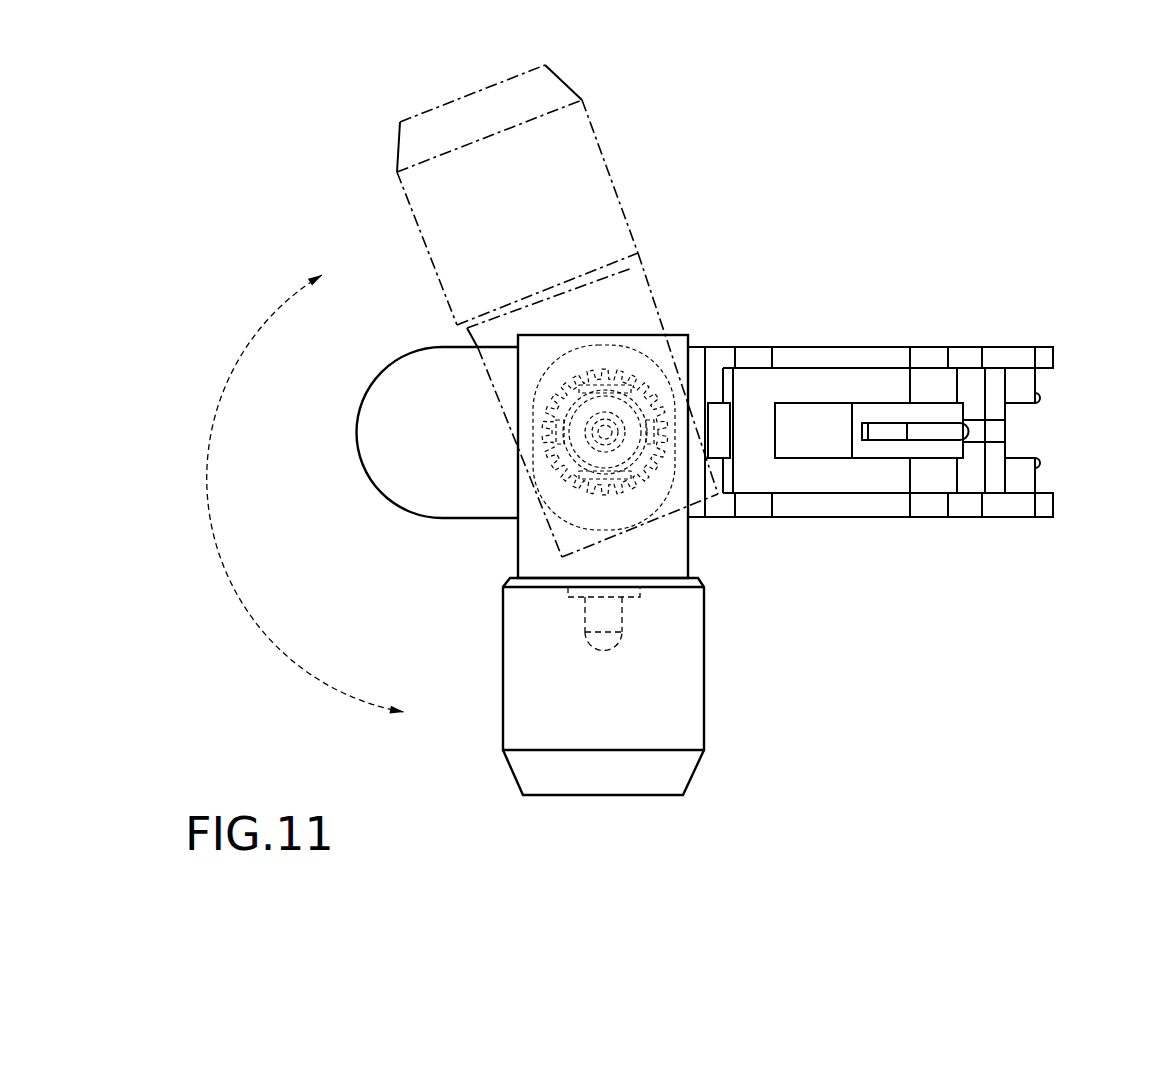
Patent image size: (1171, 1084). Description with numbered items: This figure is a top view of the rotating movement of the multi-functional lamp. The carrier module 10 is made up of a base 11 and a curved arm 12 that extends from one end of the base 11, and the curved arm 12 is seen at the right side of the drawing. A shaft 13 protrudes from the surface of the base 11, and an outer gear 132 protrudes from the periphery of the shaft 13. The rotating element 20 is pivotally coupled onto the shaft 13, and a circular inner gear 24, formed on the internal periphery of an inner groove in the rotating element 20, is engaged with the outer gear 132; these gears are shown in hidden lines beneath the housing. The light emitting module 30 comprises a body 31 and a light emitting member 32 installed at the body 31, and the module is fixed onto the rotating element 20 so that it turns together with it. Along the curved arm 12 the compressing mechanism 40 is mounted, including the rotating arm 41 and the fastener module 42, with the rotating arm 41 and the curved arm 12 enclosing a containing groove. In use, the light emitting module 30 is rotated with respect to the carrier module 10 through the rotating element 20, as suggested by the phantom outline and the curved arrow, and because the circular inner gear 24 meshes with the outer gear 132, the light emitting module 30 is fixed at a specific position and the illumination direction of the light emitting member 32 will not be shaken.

The carrier module 10 is at (385, 498).
The base 11 is at (396, 450).
The curved arm 12 is at (1020, 357).
The shaft 13 is at (588, 400).
The outer gear 132 is at (647, 403).
The rotating element 20 is at (602, 397).
The circular inner gear 24 is at (655, 385).
The light emitting module 30 is at (710, 697).
The body 31 is at (668, 548).
The light emitting member 32 is at (622, 613).
The compressing mechanism 40 is at (946, 343).
The rotating arm 41 is at (853, 482).
The fastener module 42 is at (932, 448).